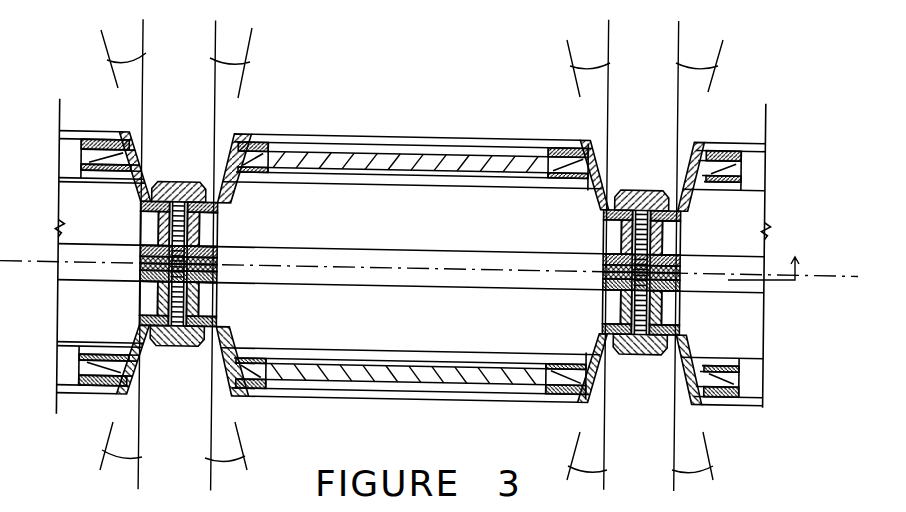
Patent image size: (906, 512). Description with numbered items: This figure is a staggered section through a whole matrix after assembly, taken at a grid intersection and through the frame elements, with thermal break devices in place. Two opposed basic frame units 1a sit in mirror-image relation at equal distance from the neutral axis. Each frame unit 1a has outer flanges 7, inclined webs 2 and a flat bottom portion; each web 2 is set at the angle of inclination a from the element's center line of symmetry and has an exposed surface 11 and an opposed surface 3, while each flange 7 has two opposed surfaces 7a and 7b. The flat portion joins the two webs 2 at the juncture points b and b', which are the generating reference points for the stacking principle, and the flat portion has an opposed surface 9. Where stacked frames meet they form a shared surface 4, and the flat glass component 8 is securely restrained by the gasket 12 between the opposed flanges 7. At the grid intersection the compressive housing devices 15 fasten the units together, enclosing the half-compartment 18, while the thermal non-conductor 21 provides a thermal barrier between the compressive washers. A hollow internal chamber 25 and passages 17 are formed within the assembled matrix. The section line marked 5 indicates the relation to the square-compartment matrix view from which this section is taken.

The angle of inclination a is at (411, 261).
The juncture point b is at (363, 268).
The juncture point b' is at (452, 268).
The basic frame unit 1a is at (411, 273).
The web 2 is at (440, 266).
The opposed web surface 3 is at (399, 238).
The shared surface 4 is at (437, 271).
The section line 5 is at (767, 251).
The outer flange 7 is at (419, 261).
The flange surface 7a is at (411, 267).
The flange surface 7b is at (412, 266).
The flat glass component 8 is at (404, 266).
The opposed flat-portion surface 9 is at (411, 268).
The exposed web surface 11 is at (448, 255).
The gasket 12 is at (728, 239).
The female compressive device 15 is at (409, 260).
The passage 17 is at (411, 268).
The half-compartment 18 is at (410, 268).
The thermal non-conductor 21 is at (410, 268).
The hollow internal chamber 25 is at (429, 267).